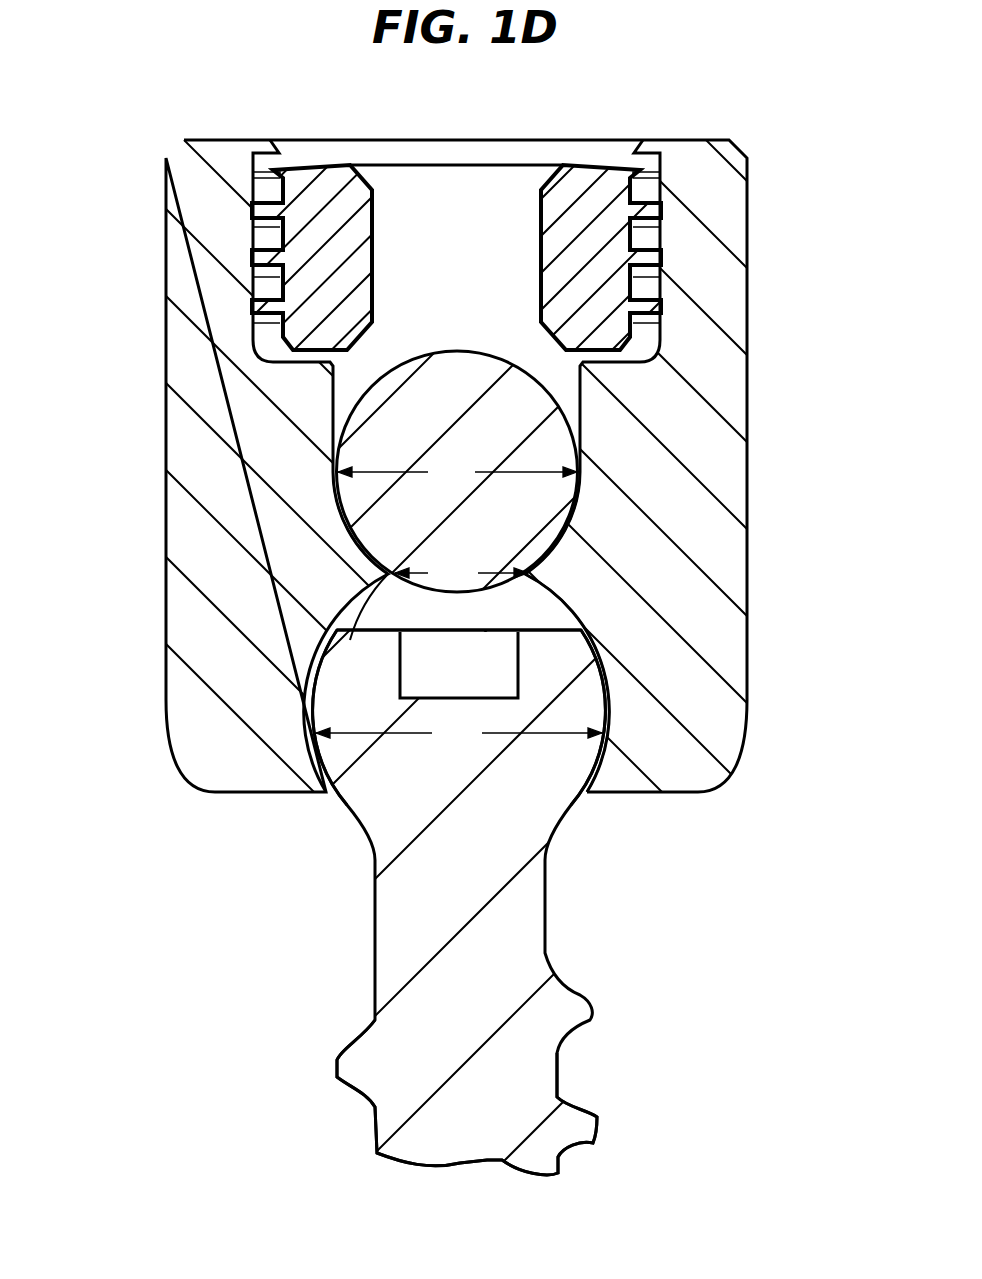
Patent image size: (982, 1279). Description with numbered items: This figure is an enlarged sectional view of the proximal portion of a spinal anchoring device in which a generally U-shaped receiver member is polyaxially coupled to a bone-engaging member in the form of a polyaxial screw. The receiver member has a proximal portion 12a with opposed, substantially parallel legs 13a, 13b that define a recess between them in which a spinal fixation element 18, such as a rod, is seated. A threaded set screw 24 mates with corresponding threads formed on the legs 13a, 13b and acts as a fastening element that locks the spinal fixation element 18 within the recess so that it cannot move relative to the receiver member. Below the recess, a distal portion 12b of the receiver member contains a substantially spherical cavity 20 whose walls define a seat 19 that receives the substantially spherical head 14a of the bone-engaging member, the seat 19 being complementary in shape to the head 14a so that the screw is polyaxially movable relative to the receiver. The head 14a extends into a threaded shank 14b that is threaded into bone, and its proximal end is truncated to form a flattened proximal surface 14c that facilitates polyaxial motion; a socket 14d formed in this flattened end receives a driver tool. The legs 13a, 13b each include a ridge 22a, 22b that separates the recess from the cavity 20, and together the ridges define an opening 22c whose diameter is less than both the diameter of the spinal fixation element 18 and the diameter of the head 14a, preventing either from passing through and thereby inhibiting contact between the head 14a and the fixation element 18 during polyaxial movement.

The proximal portion 12a is at (150, 165).
The distal portion 12b is at (155, 787).
The leg 13a is at (232, 213).
The leg 13b is at (732, 278).
The threaded set screw 24 is at (583, 203).
The spinal fixation element 18 is at (454, 408).
The ridge 22a is at (355, 546).
The ridge 22b is at (570, 537).
The opening 22c is at (402, 585).
The spherical cavity 20 is at (525, 602).
The spherical head 14a is at (490, 857).
The threaded shank 14b is at (492, 1127).
The flattened proximal surface 14c is at (555, 630).
The socket 14d is at (482, 678).
The seat 19 is at (615, 720).